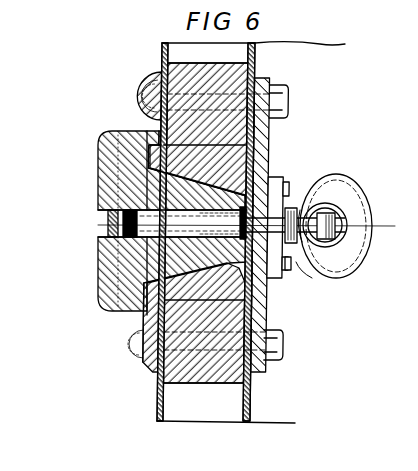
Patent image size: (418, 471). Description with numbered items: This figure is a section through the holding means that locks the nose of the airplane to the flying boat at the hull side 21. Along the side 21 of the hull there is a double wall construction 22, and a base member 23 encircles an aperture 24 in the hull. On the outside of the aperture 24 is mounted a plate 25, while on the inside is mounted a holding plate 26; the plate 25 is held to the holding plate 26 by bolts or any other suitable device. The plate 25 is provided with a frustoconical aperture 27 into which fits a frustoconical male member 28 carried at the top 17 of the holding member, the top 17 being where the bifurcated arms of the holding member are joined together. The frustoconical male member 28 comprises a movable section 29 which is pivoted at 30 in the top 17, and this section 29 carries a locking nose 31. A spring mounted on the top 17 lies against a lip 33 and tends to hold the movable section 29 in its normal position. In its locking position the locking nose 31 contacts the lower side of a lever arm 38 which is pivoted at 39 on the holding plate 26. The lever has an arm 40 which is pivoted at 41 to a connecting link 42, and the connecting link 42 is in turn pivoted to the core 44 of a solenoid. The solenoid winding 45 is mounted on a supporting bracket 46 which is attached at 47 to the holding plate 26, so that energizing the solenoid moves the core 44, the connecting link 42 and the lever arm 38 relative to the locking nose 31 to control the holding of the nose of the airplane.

The top 17 is at (103, 181).
The side 21 is at (158, 406).
The double wall construction 22 is at (161, 55).
The base member 23 is at (189, 388).
The aperture 24 is at (173, 300).
The plate 25 is at (147, 123).
The holding plate 26 is at (270, 145).
The frustoconical aperture 27 is at (265, 275).
The frustoconical male member 28 is at (250, 172).
The movable section 29 is at (112, 218).
The pivot 30 is at (100, 288).
The locking nose 31 is at (246, 223).
The lip 33 is at (102, 232).
The lever arm 38 is at (208, 226).
The pivot 39 is at (302, 206).
The arm 40 is at (357, 226).
The pivot 41 is at (352, 257).
The connecting link 42 is at (343, 214).
The core 44 is at (320, 212).
The solenoid winding 45 is at (358, 190).
The supporting bracket 46 is at (335, 270).
The attachment point 47 is at (291, 263).